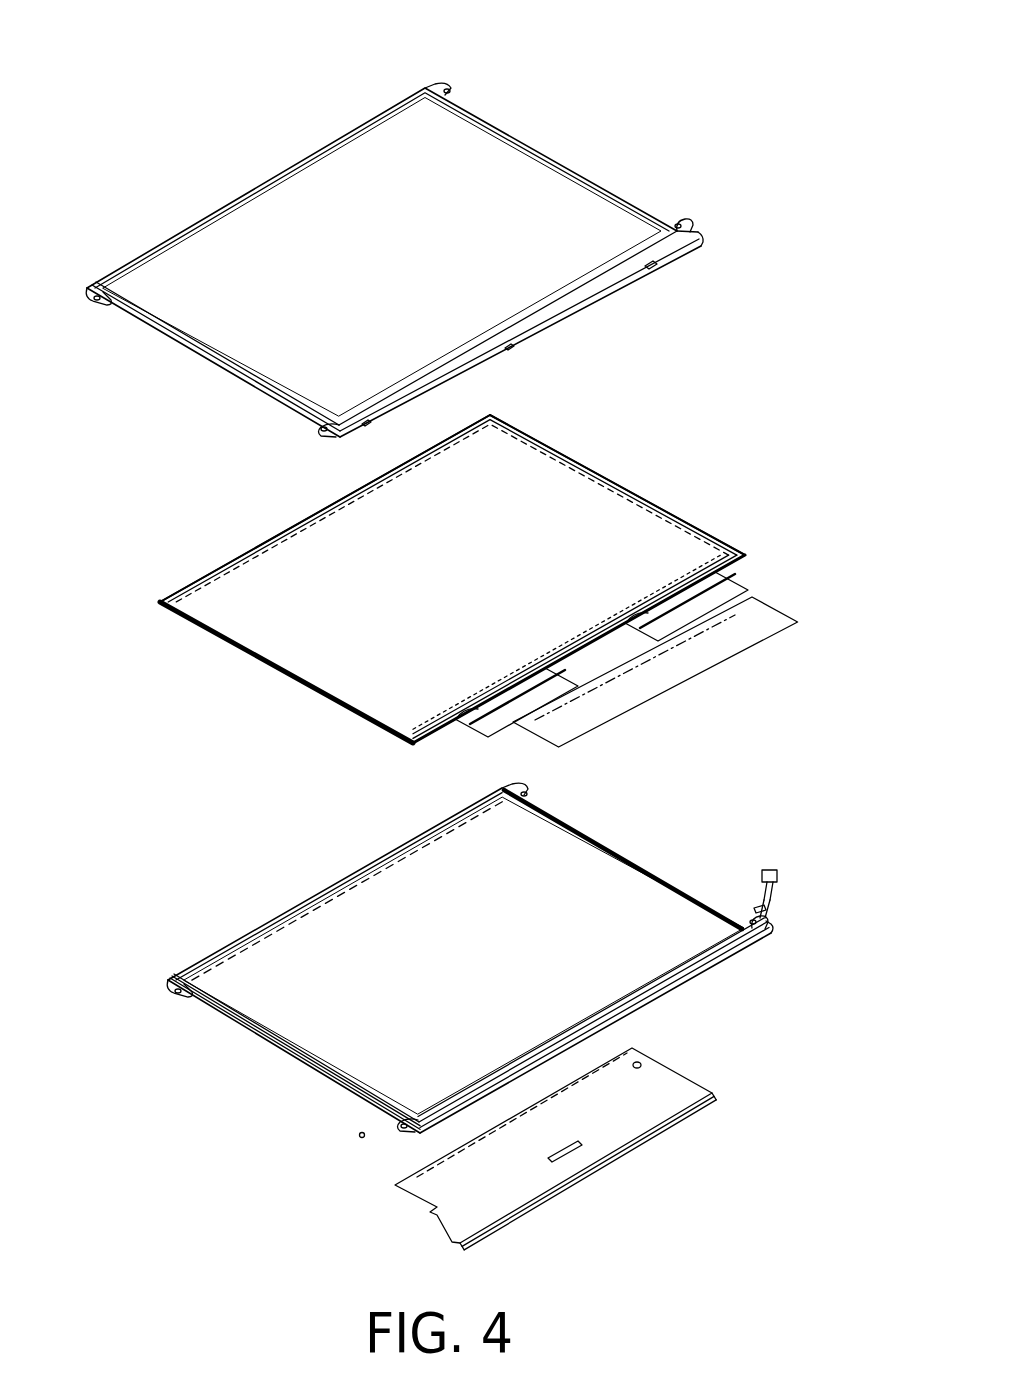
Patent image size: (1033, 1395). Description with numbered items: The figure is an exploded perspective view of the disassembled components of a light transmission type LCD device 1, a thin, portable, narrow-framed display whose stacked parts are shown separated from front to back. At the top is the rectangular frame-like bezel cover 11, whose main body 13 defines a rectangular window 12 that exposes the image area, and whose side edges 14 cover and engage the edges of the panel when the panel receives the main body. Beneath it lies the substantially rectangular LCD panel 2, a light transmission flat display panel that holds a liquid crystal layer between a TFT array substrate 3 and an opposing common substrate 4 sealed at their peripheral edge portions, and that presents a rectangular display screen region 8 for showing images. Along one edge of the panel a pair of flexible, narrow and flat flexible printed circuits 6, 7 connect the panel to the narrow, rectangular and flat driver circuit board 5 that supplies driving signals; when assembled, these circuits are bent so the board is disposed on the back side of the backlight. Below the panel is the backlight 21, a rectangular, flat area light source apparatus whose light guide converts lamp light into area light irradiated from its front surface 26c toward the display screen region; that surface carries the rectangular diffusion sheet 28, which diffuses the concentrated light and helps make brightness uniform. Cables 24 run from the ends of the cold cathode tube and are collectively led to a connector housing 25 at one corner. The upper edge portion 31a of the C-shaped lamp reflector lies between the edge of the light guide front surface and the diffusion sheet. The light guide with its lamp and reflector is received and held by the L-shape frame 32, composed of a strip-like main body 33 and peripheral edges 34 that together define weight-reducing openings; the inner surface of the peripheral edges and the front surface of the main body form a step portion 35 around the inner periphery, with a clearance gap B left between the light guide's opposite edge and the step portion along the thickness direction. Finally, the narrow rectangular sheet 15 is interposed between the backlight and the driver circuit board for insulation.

The LCD device 1 is at (580, 40).
The bezel cover 11 is at (573, 140).
The window 12 is at (332, 160).
The main body 13 is at (653, 260).
The side edges 14 is at (490, 363).
The LCD panel 2 is at (598, 470).
The display screen region 8 is at (522, 441).
The common substrate 4 is at (700, 530).
The TFT array substrate 3 is at (742, 558).
The driver circuit board 5 is at (780, 610).
The flexible printed circuit 6 is at (722, 590).
The flexible printed circuit 7 is at (494, 724).
The backlight 21 is at (612, 842).
The front surface 26c is at (538, 858).
The diffusion sheet 28 is at (660, 902).
The connector housing 25 is at (779, 875).
The cables 24 is at (774, 906).
The upper edge portion 31a is at (726, 958).
The frame 32 is at (589, 1023).
The step portion 35 is at (230, 950).
The peripheral edges 34 is at (248, 1038).
The main body 33 is at (365, 1133).
The clearance gap B is at (445, 822).
The sheet 15 is at (696, 1080).